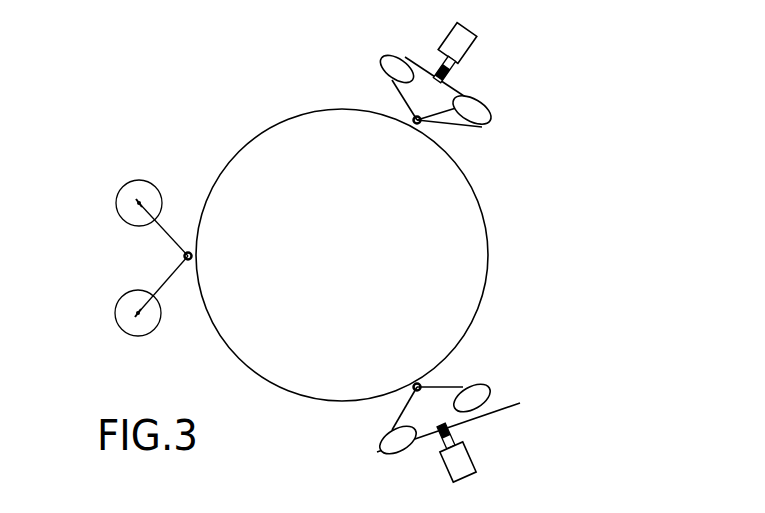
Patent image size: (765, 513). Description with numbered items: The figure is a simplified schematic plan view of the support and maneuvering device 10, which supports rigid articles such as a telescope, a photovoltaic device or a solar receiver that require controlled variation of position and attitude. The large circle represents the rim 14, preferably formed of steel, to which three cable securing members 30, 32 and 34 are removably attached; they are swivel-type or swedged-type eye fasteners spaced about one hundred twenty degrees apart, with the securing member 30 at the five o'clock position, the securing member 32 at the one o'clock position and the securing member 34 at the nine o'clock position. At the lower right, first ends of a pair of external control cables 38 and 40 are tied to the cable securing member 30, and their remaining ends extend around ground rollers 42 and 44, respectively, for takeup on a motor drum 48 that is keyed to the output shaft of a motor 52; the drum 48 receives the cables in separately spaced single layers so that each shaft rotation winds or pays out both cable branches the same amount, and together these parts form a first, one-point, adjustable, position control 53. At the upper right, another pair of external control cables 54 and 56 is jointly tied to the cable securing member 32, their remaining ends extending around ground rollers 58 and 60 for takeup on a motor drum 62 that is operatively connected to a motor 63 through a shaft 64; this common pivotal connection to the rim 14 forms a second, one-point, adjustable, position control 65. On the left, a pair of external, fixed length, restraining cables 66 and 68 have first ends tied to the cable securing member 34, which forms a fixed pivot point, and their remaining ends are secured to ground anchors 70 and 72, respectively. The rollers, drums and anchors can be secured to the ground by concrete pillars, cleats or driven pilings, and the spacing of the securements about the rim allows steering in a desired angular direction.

The support and maneuvering device 10 is at (166, 69).
The rim 14 is at (484, 250).
The cable securing member 30 is at (419, 385).
The cable securing member 32 is at (419, 122).
The cable securing member 34 is at (187, 252).
The external control cable 38 is at (392, 428).
The external control cable 40 is at (462, 413).
The ground roller 42 is at (388, 452).
The ground roller 44 is at (488, 386).
The motor drum 48 is at (452, 433).
The motor 52 is at (452, 480).
The first one-point adjustable position control 53 is at (606, 410).
The external control cable 54 is at (396, 90).
The external control cable 56 is at (482, 127).
The ground roller 58 is at (379, 60).
The ground roller 60 is at (490, 108).
The motor drum 62 is at (438, 53).
The motor 63 is at (472, 45).
The shaft 64 is at (452, 70).
The second one-point adjustable position control 65 is at (641, 89).
The restraining cable 66 is at (162, 231).
The restraining cable 68 is at (163, 282).
The ground anchor 70 is at (121, 189).
The ground anchor 72 is at (120, 327).